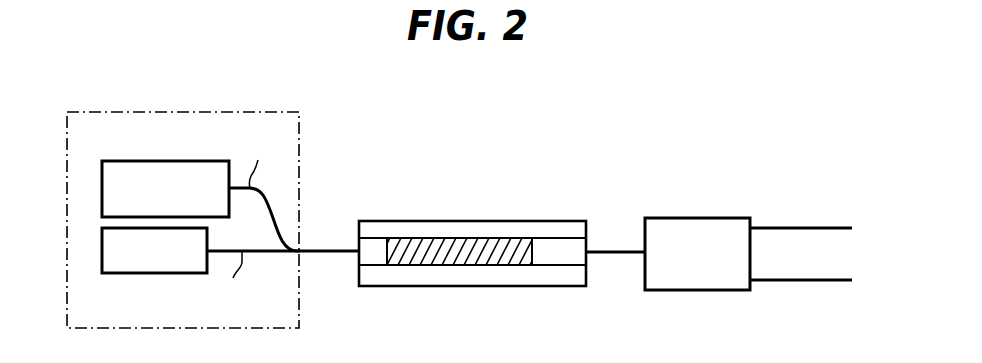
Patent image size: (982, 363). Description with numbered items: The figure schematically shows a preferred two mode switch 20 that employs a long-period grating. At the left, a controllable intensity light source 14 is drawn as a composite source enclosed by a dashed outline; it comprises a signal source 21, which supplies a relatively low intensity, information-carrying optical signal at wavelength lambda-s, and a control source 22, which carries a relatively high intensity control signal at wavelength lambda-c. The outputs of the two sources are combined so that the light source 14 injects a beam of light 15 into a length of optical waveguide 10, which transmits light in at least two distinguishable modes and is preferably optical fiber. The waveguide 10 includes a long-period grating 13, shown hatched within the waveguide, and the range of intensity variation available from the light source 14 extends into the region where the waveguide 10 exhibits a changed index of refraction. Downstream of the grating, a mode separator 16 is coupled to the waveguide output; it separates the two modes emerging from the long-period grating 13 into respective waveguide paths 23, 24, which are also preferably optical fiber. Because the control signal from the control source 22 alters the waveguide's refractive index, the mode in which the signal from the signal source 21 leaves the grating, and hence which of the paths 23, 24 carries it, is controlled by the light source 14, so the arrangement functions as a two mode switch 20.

The optical waveguide 10 is at (418, 221).
The long-period grating 13 is at (452, 265).
The controllable intensity light source 14 is at (118, 112).
The beam of light 15 is at (332, 255).
The mode separator 16 is at (687, 218).
The two mode switch 20 is at (594, 146).
The signal source 21 is at (142, 273).
The control source 22 is at (182, 161).
The waveguide path 23 is at (815, 228).
The waveguide path 24 is at (803, 280).